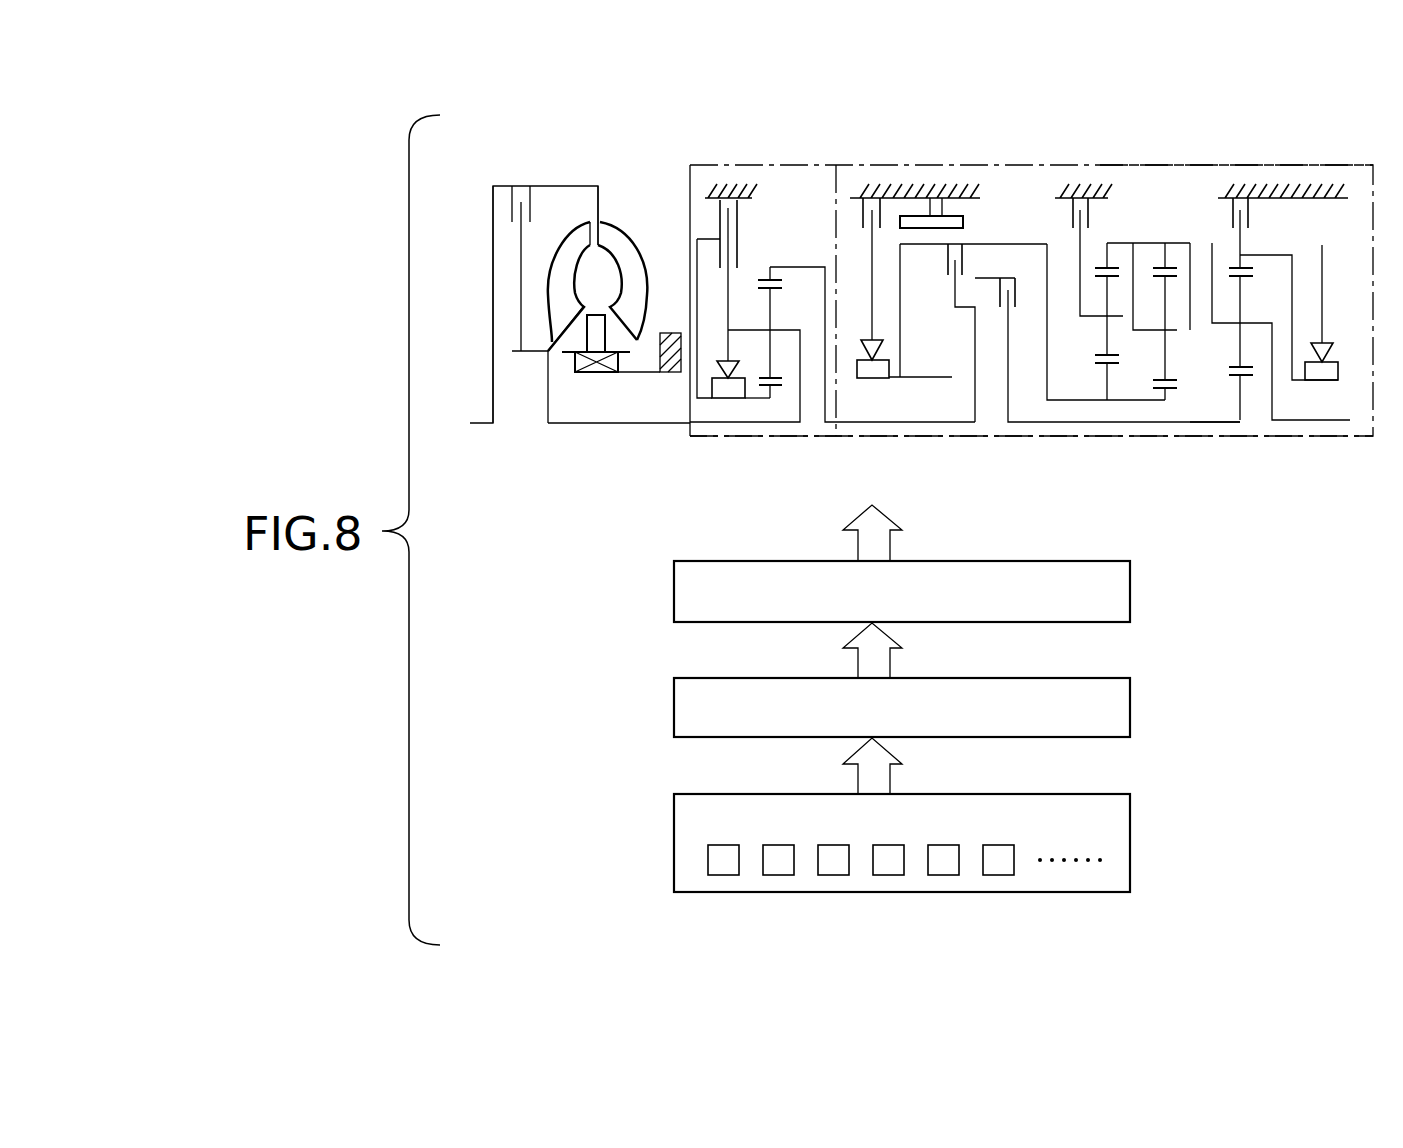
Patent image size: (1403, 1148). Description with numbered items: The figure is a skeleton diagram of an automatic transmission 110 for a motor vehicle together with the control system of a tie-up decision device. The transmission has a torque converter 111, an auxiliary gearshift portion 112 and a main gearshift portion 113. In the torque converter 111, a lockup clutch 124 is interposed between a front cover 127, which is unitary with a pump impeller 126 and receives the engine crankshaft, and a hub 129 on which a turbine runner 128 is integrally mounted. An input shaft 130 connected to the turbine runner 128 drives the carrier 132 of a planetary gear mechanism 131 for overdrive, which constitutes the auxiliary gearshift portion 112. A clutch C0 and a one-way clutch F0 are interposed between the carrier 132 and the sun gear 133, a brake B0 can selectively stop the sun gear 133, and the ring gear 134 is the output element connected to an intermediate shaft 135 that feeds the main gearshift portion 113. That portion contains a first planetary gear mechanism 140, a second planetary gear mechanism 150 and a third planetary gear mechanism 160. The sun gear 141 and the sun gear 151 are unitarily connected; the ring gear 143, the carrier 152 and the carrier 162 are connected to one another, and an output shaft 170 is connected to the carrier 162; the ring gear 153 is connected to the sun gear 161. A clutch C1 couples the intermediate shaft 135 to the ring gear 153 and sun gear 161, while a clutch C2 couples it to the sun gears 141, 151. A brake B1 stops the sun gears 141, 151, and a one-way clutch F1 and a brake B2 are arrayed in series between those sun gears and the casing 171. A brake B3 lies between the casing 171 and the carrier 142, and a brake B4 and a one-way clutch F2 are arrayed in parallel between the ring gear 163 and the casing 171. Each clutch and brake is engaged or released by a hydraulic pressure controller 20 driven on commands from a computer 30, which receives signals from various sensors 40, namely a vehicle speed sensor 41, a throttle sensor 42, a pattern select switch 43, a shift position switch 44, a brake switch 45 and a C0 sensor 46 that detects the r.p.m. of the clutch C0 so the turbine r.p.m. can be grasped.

The torque converter 111 is at (628, 162).
The front cover 127 is at (493, 250).
The lockup clutch 124 is at (521, 200).
The turbine runner 128 is at (572, 222).
The pump impeller 126 is at (608, 223).
The hub 129 is at (533, 352).
The input shaft 130 is at (621, 423).
The automatic transmission 110 is at (1000, 158).
The main gearshift portion 113 is at (1200, 165).
The auxiliary gearshift portion 112 is at (824, 440).
The casing 171 is at (895, 190).
The brake B0 is at (720, 204).
The clutch C0 is at (699, 248).
The ring gear 134 is at (768, 280).
The carrier 132 is at (793, 330).
The one-way clutch F0 is at (723, 396).
The planetary gear mechanism 131 is at (749, 408).
The sun gear 133 is at (780, 390).
The brake B2 is at (863, 208).
The one-way clutch F1 is at (872, 380).
The intermediate shaft 135 is at (922, 436).
The brake B1 is at (948, 212).
The clutch C2 is at (948, 258).
The clutch C1 is at (1013, 292).
The brake B3 is at (1073, 211).
The first planetary gear mechanism 140 is at (1098, 410).
The ring gear 143 is at (1107, 266).
The carrier 142 is at (1093, 318).
The sun gear 141 is at (1100, 370).
The second planetary gear mechanism 150 is at (1166, 410).
The ring gear 153 is at (1165, 258).
The carrier 152 is at (1138, 332).
The sun gear 151 is at (1160, 397).
The third planetary gear mechanism 160 is at (1252, 420).
The brake B4 is at (1248, 212).
The ring gear 163 is at (1235, 266).
The carrier 162 is at (1269, 322).
The sun gear 161 is at (1237, 377).
The one-way clutch F2 is at (1338, 365).
The output shaft 170 is at (1335, 430).
The hydraulic pressure controller 20 is at (1132, 592).
The computer 30 is at (1132, 712).
The various sensors 40 is at (1132, 835).
The vehicle speed sensor 41 is at (724, 875).
The throttle sensor 42 is at (779, 875).
The pattern select switch 43 is at (834, 875).
The shift position switch 44 is at (889, 875).
The brake switch 45 is at (944, 875).
The C0 sensor 46 is at (999, 875).